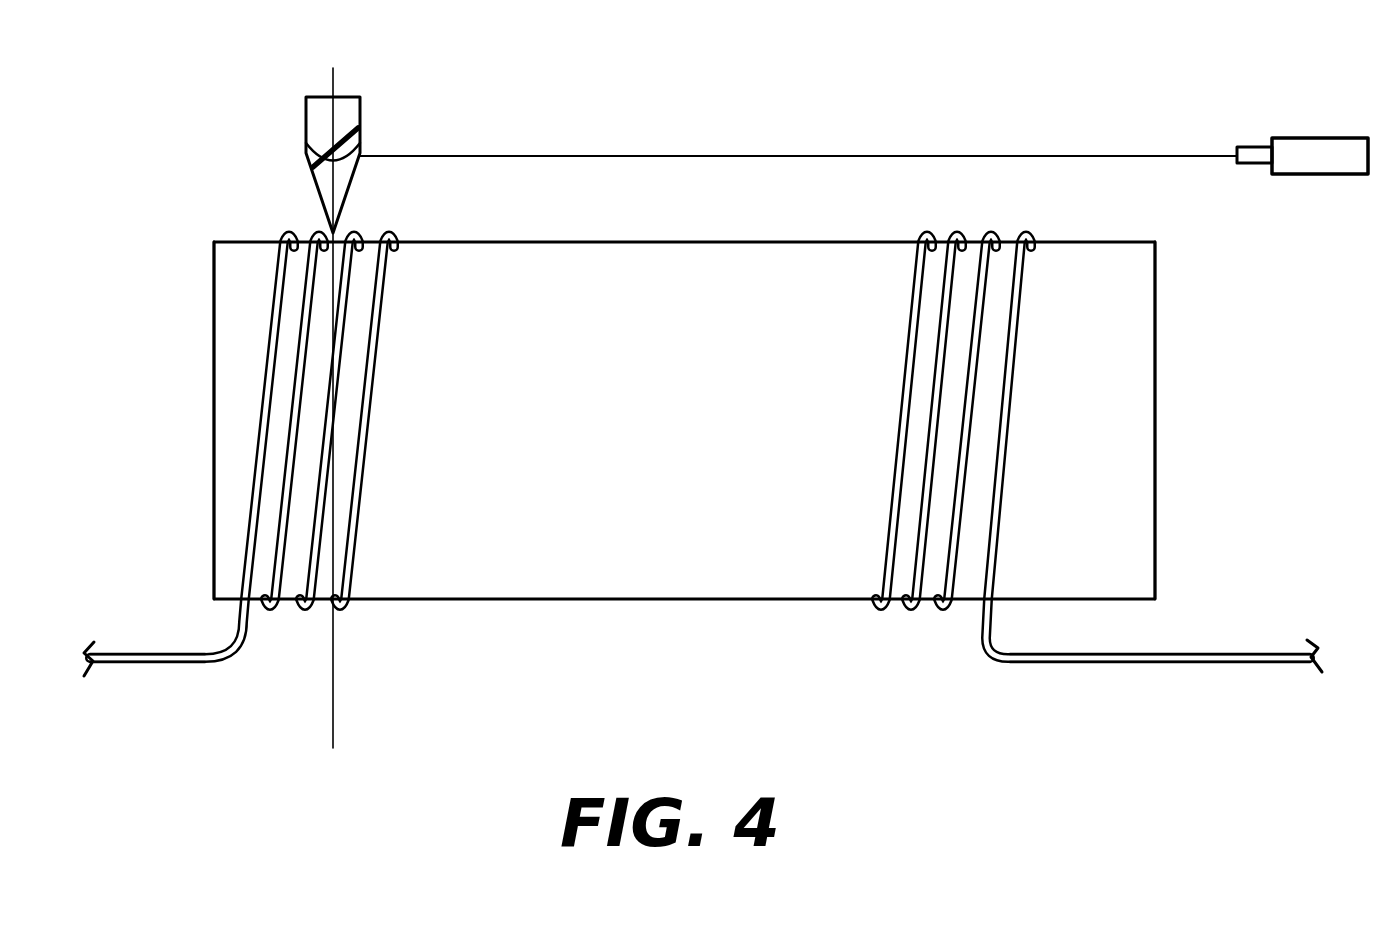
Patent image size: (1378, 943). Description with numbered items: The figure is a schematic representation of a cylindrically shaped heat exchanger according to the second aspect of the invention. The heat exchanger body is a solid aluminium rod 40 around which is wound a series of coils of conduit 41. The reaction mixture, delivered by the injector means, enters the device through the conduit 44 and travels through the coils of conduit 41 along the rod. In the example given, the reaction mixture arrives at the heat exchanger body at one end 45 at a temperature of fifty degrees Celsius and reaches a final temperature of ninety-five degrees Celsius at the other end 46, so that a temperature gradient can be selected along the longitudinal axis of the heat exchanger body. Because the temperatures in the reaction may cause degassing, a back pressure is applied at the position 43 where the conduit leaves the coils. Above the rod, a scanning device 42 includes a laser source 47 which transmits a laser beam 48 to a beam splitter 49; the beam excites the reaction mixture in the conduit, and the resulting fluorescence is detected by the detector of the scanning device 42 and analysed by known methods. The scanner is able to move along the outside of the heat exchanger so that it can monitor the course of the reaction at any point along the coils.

The solid aluminium rod 40 is at (658, 272).
The coils of conduit 41 is at (887, 525).
The scanning device 42 is at (360, 102).
The back pressure position 43 is at (1253, 663).
The conduit 44 is at (212, 665).
The end of heat exchanger body 45 is at (214, 422).
The end of heat exchanger body 46 is at (1158, 403).
The laser source 47 is at (1312, 138).
The laser beam 48 is at (892, 155).
The beam splitter 49 is at (306, 143).